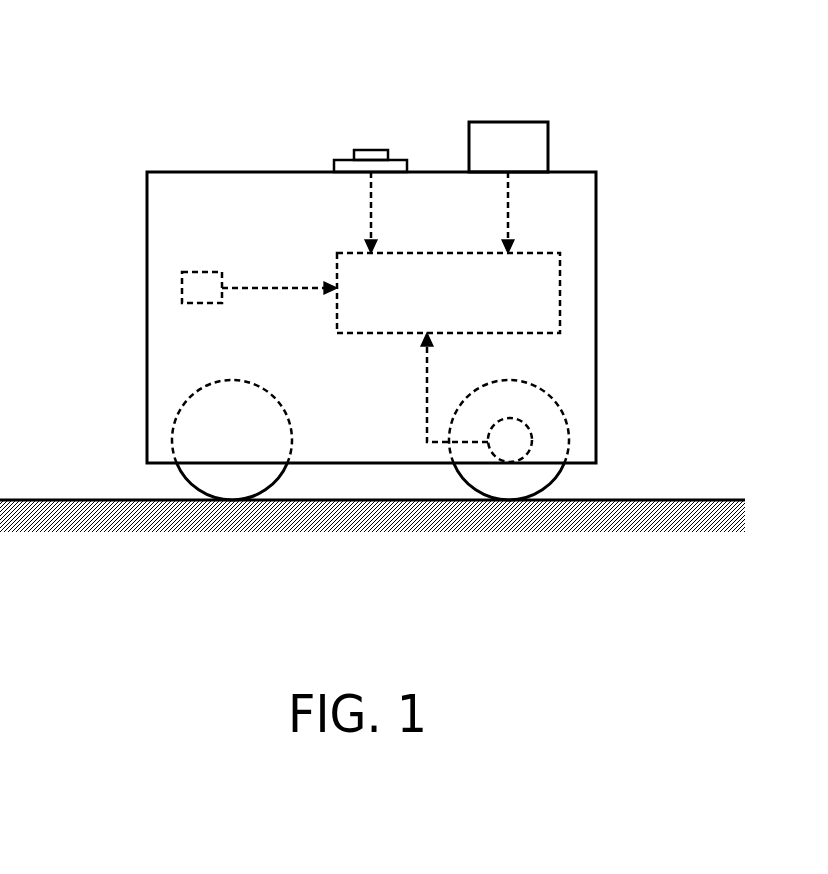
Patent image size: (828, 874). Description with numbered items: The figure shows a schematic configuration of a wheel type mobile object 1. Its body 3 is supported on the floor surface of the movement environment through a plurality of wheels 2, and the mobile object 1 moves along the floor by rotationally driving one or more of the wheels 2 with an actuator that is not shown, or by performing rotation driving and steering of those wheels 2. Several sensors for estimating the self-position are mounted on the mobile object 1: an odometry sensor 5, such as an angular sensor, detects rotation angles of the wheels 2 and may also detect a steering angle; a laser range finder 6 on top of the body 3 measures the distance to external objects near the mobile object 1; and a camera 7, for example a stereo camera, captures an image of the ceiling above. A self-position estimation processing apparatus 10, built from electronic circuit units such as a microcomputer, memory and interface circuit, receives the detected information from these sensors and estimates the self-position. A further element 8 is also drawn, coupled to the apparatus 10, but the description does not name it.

The mobile object 1 is at (604, 88).
The wheels 2 is at (182, 480).
The body 3 is at (596, 237).
The odometry sensor 5 is at (525, 430).
The laser range finder 6 is at (497, 121).
The camera 7 is at (367, 150).
The operation unit 8 is at (182, 288).
The self-position estimation processing apparatus 10 is at (560, 293).